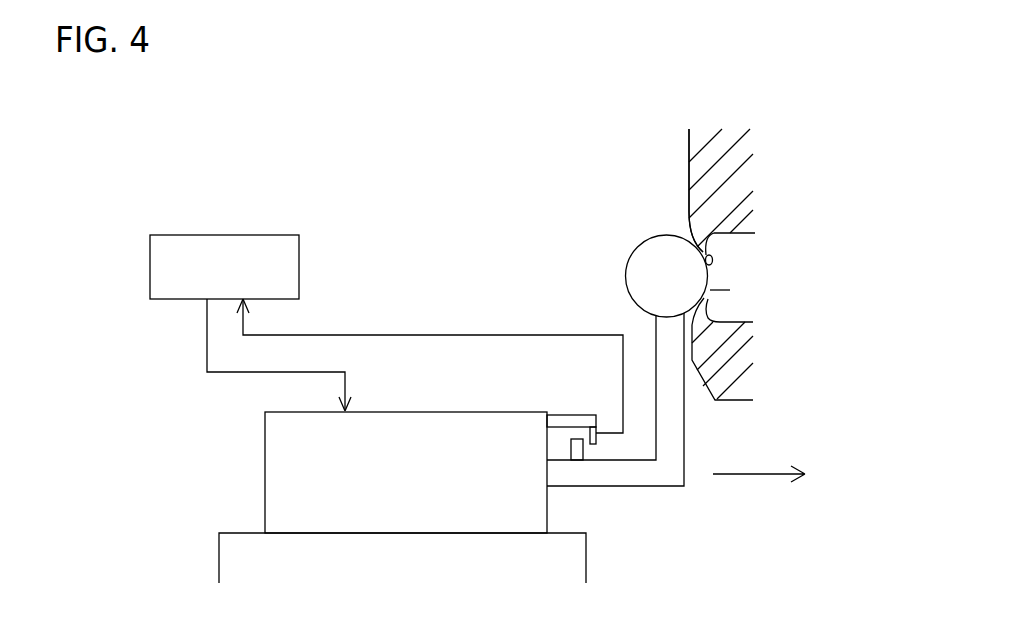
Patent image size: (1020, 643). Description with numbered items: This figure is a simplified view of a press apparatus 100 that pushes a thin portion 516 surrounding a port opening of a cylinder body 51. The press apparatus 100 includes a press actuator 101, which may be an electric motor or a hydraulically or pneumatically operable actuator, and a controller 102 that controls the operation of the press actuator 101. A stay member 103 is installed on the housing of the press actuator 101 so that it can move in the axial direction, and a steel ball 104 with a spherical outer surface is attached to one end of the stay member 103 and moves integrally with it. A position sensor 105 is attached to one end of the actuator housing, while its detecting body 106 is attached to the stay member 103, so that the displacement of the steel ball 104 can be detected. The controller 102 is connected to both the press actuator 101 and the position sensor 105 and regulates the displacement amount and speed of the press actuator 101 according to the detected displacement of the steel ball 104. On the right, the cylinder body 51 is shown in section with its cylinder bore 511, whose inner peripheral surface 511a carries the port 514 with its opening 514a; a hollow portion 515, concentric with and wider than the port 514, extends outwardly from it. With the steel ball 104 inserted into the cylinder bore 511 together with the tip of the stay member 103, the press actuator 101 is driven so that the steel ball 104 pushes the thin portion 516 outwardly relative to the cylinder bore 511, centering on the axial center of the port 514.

The press apparatus 100 is at (355, 188).
The press actuator 101 is at (265, 472).
The controller 102 is at (150, 263).
The stay member 103 is at (647, 487).
The steel ball 104 is at (647, 238).
The position sensor 105 is at (590, 428).
The detecting body 106 is at (582, 450).
The cylinder body 51 is at (748, 396).
The cylinder bore 511 is at (689, 135).
The inner peripheral surface 511a is at (689, 160).
The port 514 is at (711, 262).
The opening 514a is at (730, 290).
The hollow portion 515 is at (753, 322).
The thin portion 516 is at (755, 233).